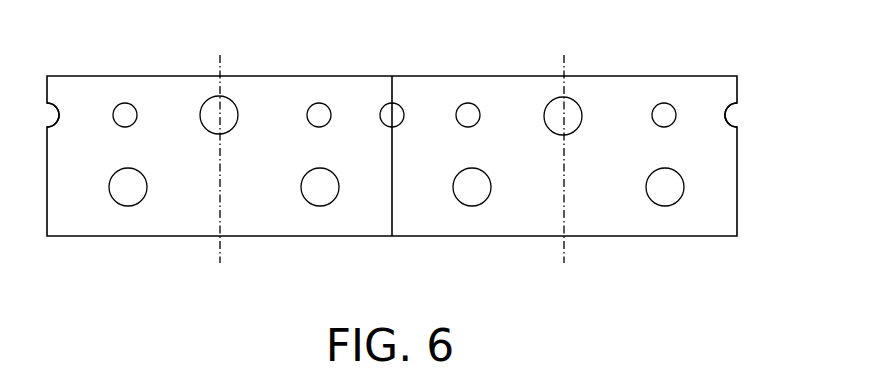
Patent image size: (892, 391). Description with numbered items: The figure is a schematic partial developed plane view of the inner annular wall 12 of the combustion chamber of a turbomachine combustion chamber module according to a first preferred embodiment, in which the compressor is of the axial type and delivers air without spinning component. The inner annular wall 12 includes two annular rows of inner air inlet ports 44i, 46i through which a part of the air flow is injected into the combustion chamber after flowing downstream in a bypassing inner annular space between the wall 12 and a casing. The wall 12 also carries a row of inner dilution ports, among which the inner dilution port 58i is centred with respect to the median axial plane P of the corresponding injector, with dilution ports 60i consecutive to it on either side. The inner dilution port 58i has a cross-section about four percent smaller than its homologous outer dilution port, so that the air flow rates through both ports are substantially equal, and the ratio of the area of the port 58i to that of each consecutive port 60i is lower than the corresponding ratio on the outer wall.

The inner annular wall 12 is at (692, 75).
The inner dilution port 58i is at (214, 97).
The inner dilution port 60i is at (125, 103).
The inner air inlet port 44i is at (710, 183).
The inner air inlet port 46i is at (732, 113).
The median axial plane P is at (220, 245).